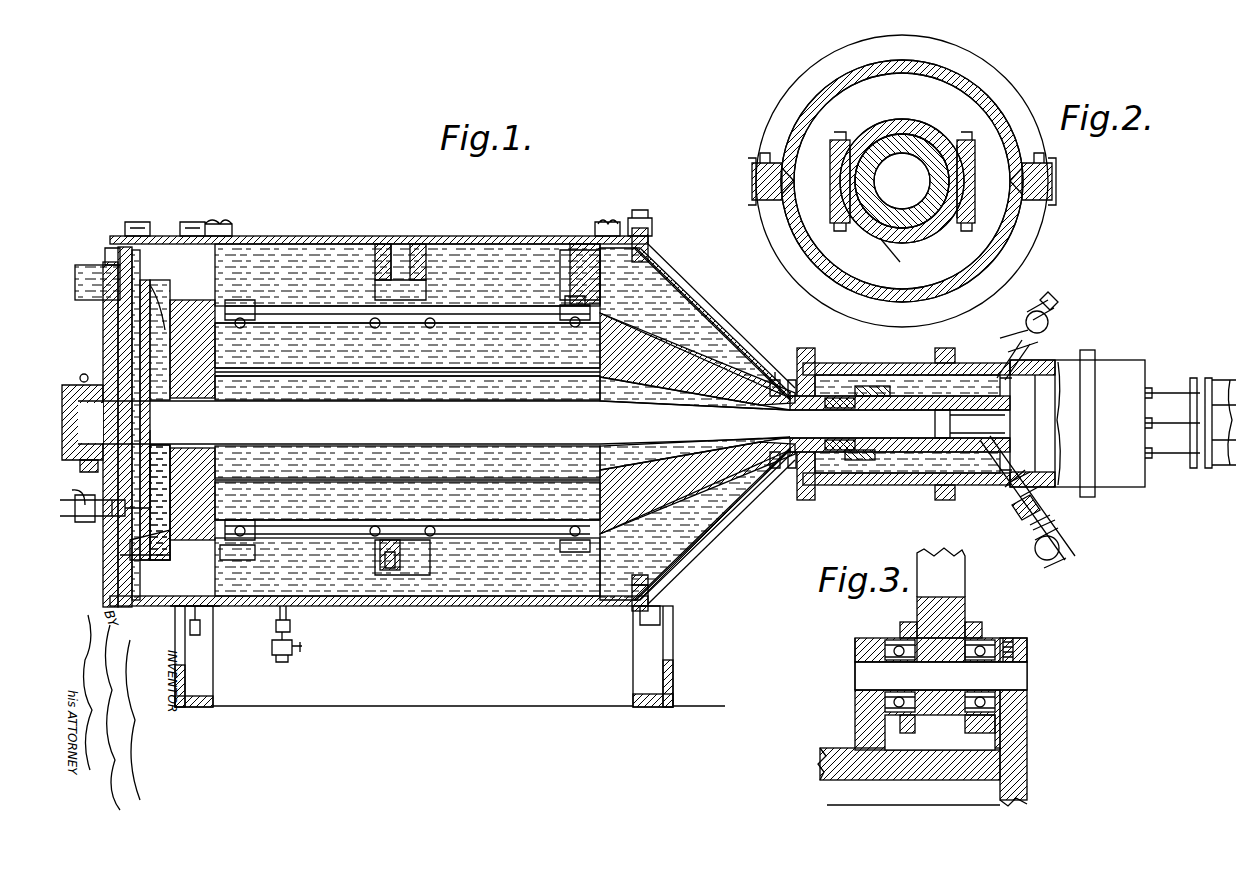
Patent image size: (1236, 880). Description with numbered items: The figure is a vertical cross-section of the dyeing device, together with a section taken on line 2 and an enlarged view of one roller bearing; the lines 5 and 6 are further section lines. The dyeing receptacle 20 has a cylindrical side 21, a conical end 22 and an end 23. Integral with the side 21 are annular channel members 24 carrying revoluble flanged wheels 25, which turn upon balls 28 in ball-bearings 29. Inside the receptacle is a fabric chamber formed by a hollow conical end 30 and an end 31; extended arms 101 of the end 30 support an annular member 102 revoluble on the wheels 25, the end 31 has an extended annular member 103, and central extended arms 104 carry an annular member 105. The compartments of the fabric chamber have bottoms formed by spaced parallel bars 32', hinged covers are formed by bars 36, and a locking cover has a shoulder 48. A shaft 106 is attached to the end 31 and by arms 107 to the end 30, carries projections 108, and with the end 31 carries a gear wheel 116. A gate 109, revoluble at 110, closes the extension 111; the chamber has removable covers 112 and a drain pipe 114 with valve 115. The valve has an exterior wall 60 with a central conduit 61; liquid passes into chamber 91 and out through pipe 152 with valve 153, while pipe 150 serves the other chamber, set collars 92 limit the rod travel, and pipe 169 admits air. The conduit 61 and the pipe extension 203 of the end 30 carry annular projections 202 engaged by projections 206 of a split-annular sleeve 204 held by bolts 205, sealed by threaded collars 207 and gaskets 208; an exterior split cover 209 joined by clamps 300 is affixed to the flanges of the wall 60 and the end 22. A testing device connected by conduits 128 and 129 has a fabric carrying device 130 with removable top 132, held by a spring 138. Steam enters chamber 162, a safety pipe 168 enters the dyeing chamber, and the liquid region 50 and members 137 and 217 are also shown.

In FIG. 1, the section line 5 is at (157, 220).
In FIG. 1, the section line 6 is at (343, 235).
In FIG. 1, the section line 2— 2 is at (909, 513).
In FIG. 1, the dyeing receptacle 20 is at (488, 606).
In FIG. 1, the cylindrical side 21 is at (540, 610).
In FIG. 3, the cylindrical side 21 is at (956, 776).
In FIG. 1, the conical end 22 is at (690, 300).
In FIG. 1, the end 23 is at (104, 330).
In FIG. 1, the annular channel members 24 is at (265, 298).
In FIG. 3, the annular channel members 24 is at (855, 745).
In FIG. 1, the revoluble flanged wheels 25 is at (197, 236).
In FIG. 3, the revoluble flanged wheels 25 is at (945, 712).
In FIG. 3, the balls 28 is at (897, 641).
In FIG. 3, the ball-bearings 29 is at (868, 658).
In FIG. 1, the hollow conical end 30 is at (668, 358).
In FIG. 1, the end 31 is at (407, 345).
In FIG. 1, the spaced parallel bars 32' is at (407, 411).
In FIG. 1, the bars 36 is at (320, 328).
In FIG. 1, the shoulder 48 is at (566, 303).
In FIG. 1, the liquid chamber 50 is at (314, 312).
In FIG. 1, the exterior wall 60 is at (1045, 365).
In FIG. 1, the conduit 61 is at (985, 410).
In FIG. 2, the conduit 61 is at (894, 258).
In FIG. 1, the chamber 91 is at (977, 425).
In FIG. 2, the chamber 91 is at (901, 182).
In FIG. 1, the set collars 92 is at (975, 490).
In FIG. 1, the extended arms 101 is at (648, 318).
In FIG. 3, the extended arms 101 is at (966, 574).
In FIG. 1, the annular member 102 is at (640, 575).
In FIG. 3, the annular member 102 is at (968, 606).
In FIG. 1, the extended annular member 103 is at (235, 560).
In FIG. 1, the extended arms 104 is at (426, 562).
In FIG. 1, the annular member 105 is at (467, 562).
In FIG. 1, the shaft 106 is at (434, 422).
In FIG. 1, the arms 107 is at (648, 390).
In FIG. 1, the projections 108 is at (104, 423).
In FIG. 1, the gate 109 is at (80, 416).
In FIG. 1, the pivot of gate 110 is at (85, 374).
In FIG. 1, the extension 111 is at (86, 472).
In FIG. 1, the removable covers 112 is at (430, 240).
In FIG. 1, the drain pipe 114 is at (290, 626).
In FIG. 1, the valve 115 is at (301, 651).
In FIG. 1, the gear wheel 116 is at (118, 566).
In FIG. 1, the conduit 128 is at (222, 390).
In FIG. 1, the conduit 129 is at (272, 300).
In FIG. 1, the fabric carrying device 130 is at (148, 300).
In FIG. 1, the removable top 132 is at (706, 458).
In FIG. 1, the lower conical member 137 is at (690, 478).
In FIG. 1, the spring 138 is at (407, 486).
In FIG. 1, the pipe 150 is at (1045, 303).
In FIG. 1, the pipe 152 is at (1072, 565).
In FIG. 1, the valve 153 is at (1060, 548).
In FIG. 1, the chamber 162 is at (115, 495).
In FIG. 1, the pipe 168 is at (100, 270).
In FIG. 1, the pipe 169 is at (1218, 468).
In FIG. 1, the annular projections 202 is at (865, 380).
In FIG. 2, the annular projections 202 is at (886, 228).
In FIG. 1, the pipe extension 203 is at (800, 365).
In FIG. 1, the split-annular sleeve 204 is at (896, 470).
In FIG. 2, the split-annular sleeve 204 is at (886, 130).
In FIG. 2, the bolts 205 is at (840, 140).
In FIG. 1, the annular projections 206 is at (858, 462).
In FIG. 1, the threaded collars 207 is at (815, 385).
In FIG. 1, the gaskets 208 is at (900, 424).
In FIG. 1, the exterior split cover 209 is at (800, 345).
In FIG. 2, the exterior split cover 209 is at (947, 70).
In FIG. 1, the inlet passage 217 is at (990, 405).
In FIG. 2, the clamps 300 is at (752, 172).